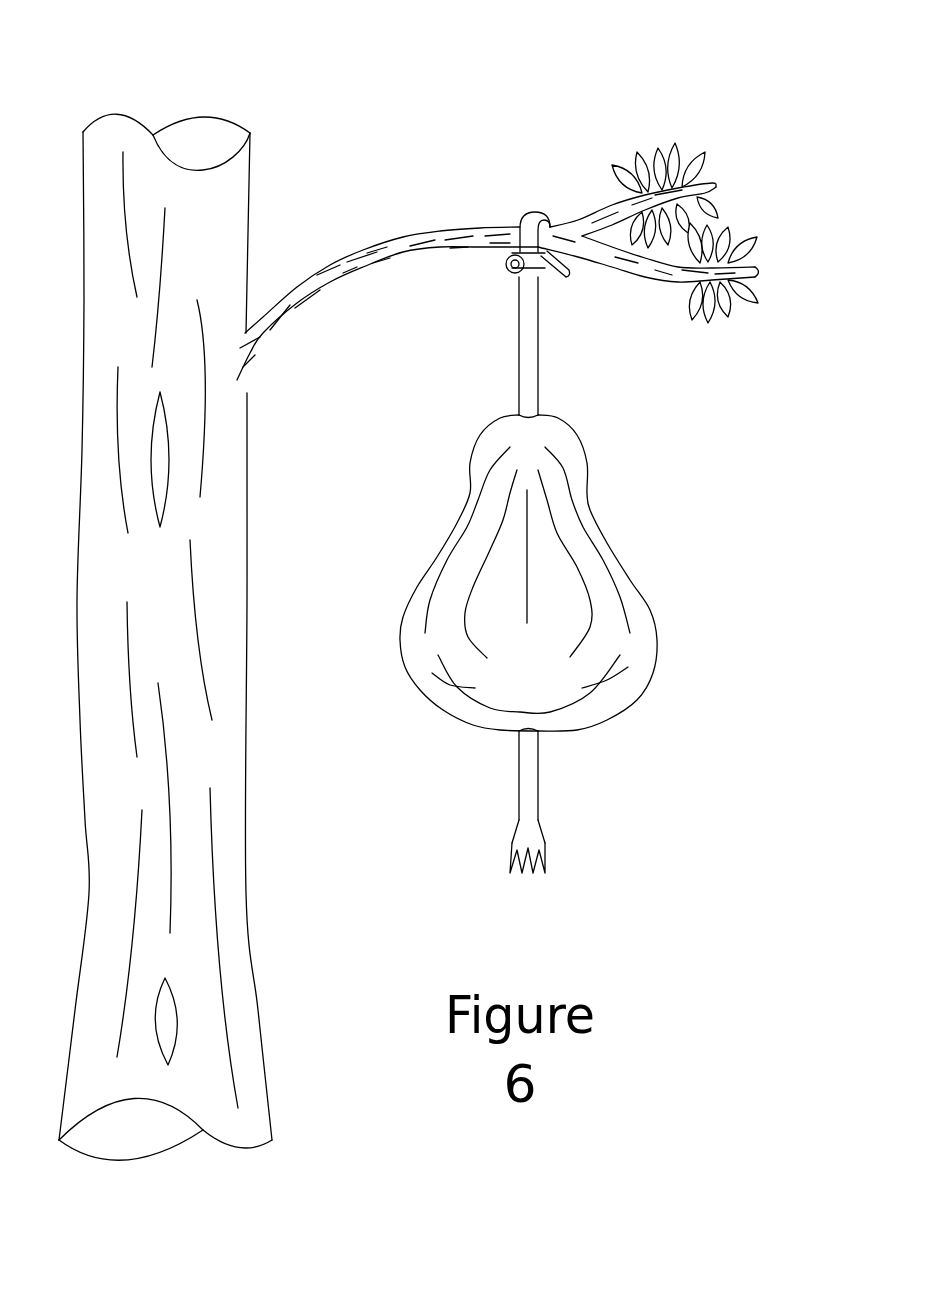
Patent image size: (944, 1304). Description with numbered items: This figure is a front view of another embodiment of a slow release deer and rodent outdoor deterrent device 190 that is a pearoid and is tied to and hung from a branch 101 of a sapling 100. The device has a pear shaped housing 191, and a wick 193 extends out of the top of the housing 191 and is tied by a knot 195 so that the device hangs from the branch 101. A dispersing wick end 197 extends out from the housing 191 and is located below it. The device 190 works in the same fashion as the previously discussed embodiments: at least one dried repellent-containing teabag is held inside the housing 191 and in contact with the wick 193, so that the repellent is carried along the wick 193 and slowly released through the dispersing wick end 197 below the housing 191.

The sapling 100 is at (292, 172).
The branch 101 is at (413, 240).
The slow release deer and rodent outdoor deterrent device 190 is at (724, 468).
The pear shaped housing 191 is at (663, 658).
The wick 193 is at (520, 348).
The knot 195 is at (542, 222).
The dispersing wick end 197 is at (520, 837).